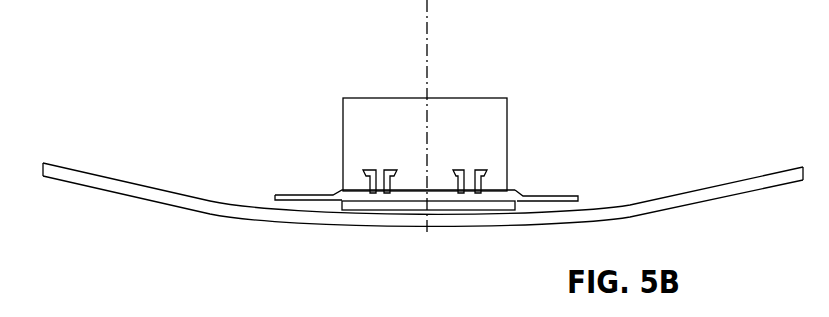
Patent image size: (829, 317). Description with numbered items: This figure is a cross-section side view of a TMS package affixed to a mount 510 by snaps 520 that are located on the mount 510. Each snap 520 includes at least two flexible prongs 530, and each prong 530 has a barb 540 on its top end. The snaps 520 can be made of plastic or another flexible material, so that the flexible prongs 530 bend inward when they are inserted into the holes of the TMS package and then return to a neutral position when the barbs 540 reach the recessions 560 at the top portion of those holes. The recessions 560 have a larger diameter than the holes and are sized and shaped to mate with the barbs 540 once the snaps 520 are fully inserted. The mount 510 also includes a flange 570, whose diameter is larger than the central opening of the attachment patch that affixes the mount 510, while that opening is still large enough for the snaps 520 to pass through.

The mount 510 is at (433, 190).
The snap 520 is at (380, 165).
The flexible prong 530 is at (364, 182).
The barb 540 is at (488, 172).
The recession 560 is at (460, 163).
The flange 570 is at (492, 204).